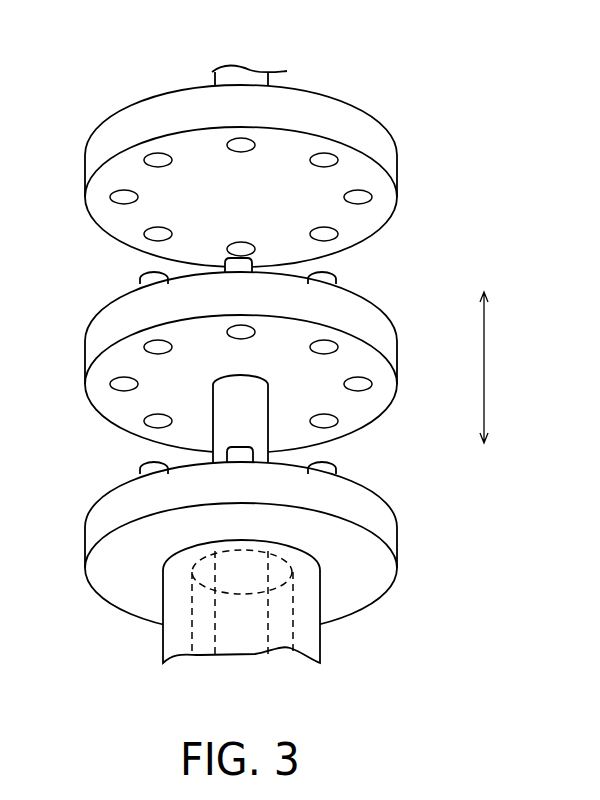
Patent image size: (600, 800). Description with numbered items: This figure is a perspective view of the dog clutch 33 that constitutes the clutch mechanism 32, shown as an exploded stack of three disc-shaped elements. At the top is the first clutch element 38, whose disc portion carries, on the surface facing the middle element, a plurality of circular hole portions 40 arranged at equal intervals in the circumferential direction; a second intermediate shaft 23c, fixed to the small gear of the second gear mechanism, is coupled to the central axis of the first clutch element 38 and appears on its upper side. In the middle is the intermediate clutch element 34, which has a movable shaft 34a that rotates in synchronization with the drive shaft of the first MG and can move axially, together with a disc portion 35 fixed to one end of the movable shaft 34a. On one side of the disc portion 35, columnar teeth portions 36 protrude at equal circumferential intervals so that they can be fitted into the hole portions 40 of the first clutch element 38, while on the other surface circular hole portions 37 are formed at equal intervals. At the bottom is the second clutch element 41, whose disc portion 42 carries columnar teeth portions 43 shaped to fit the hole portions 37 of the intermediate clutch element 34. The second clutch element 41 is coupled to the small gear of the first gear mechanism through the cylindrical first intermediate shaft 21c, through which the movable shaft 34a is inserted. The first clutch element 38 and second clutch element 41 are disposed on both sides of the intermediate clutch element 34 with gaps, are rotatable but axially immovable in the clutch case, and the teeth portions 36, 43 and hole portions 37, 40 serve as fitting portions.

The clutch mechanism 32 is at (428, 127).
The dog clutch 33 is at (360, 128).
The first clutch element 38 is at (335, 88).
The hole portion 40 is at (157, 164).
The second intermediate shaft 23c is at (242, 75).
The intermediate clutch element 34 is at (398, 305).
The disc portion 35 is at (363, 305).
The teeth portions 36 is at (143, 280).
The hole portions 37 is at (150, 353).
The movable shaft 34a is at (250, 402).
The second clutch element 41 is at (371, 592).
The disc portion 42 is at (375, 523).
The teeth portions 43 is at (150, 462).
The first intermediate shaft 21c is at (310, 645).